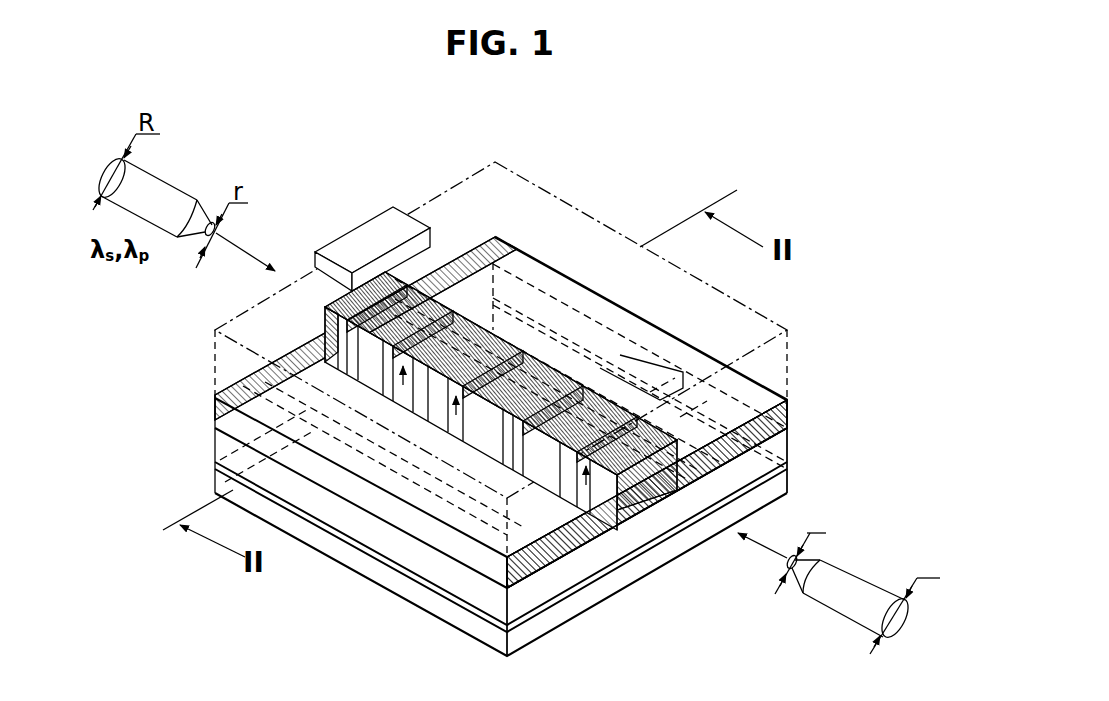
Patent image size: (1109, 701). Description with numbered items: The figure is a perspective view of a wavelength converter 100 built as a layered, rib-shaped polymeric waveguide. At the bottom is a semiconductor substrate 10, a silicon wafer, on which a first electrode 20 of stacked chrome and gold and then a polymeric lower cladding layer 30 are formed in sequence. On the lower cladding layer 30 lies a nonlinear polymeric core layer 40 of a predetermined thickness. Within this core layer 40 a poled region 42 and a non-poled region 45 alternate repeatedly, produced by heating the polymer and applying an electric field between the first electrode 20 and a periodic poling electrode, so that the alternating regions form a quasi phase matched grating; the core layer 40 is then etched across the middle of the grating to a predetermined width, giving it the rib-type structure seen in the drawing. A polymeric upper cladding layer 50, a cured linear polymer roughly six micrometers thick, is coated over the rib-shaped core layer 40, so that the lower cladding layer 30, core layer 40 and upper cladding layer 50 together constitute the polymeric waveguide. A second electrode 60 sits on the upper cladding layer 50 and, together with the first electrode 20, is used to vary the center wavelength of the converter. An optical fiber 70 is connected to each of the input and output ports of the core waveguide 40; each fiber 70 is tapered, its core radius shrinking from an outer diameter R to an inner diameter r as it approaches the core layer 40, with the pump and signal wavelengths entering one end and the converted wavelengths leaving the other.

The wavelength converter 100 is at (580, 186).
The semiconductor substrate 10 is at (781, 485).
The first electrode 20 is at (781, 467).
The polymeric lower cladding layer 30 is at (781, 442).
The nonlinear polymeric core layer 40 is at (781, 412).
The poled region 42 is at (501, 374).
The non-poled region 45 is at (555, 372).
The polymeric upper cladding layer 50 is at (781, 370).
The second electrode 60 is at (357, 228).
The optical fiber 70 is at (863, 596).